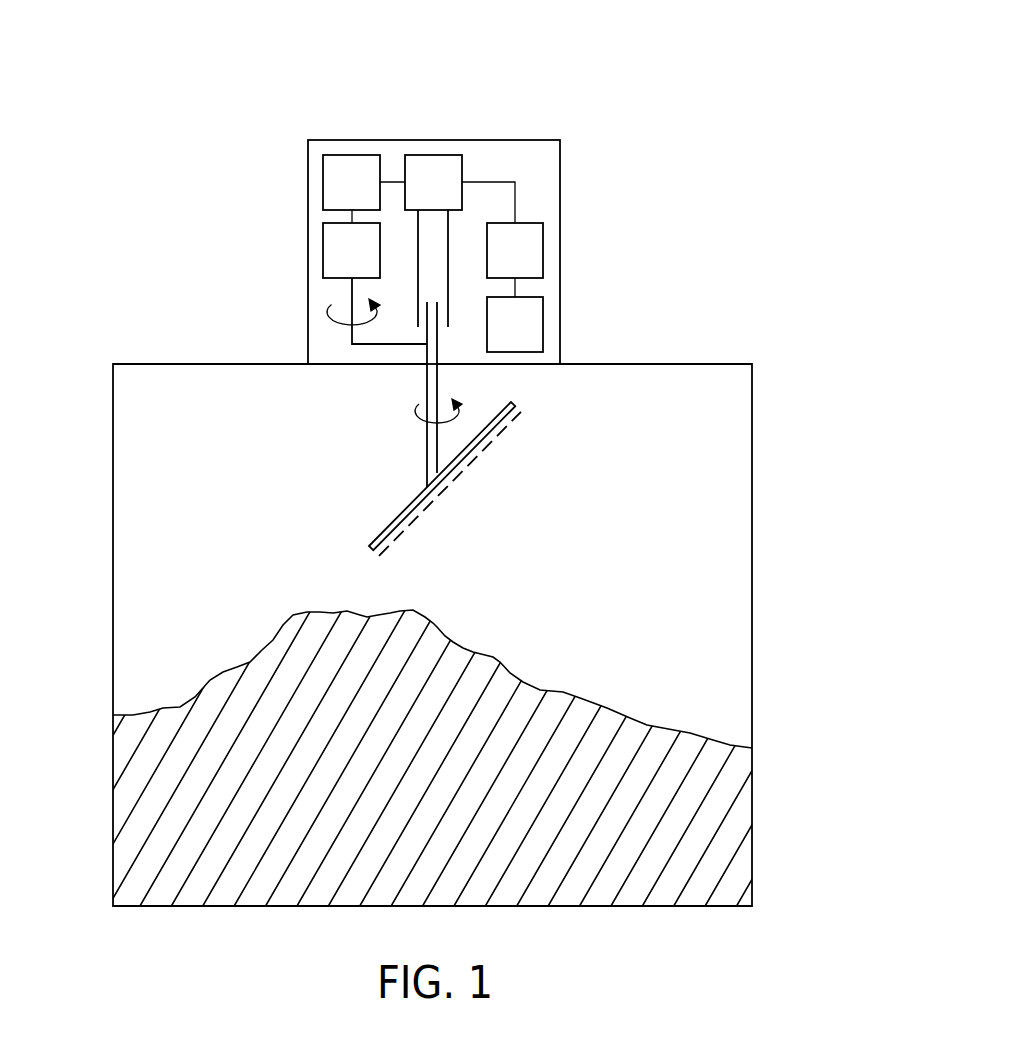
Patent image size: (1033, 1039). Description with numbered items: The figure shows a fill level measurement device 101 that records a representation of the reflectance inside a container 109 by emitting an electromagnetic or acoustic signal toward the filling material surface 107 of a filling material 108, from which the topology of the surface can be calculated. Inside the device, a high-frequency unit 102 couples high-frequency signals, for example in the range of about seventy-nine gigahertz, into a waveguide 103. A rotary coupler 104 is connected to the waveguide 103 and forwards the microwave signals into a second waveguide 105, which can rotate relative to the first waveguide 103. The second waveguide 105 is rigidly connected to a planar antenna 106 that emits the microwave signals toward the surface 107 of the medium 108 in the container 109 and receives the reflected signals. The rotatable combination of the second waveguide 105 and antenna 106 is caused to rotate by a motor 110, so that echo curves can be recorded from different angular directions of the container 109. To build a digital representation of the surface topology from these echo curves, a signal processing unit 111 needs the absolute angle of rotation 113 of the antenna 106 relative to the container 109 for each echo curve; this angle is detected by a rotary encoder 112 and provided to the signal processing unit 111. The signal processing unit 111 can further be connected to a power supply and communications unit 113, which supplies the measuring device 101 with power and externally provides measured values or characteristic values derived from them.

The fill level measurement device 101 is at (659, 100).
The high-frequency unit 102 is at (427, 155).
The waveguide 103 is at (433, 233).
The rotary coupler 104 is at (416, 313).
The second waveguide 105 is at (430, 445).
The planar antenna 106 is at (518, 403).
The filling material surface 107 is at (523, 678).
The filling material 108 is at (528, 855).
The container 109 is at (752, 654).
The motor 110 is at (323, 258).
The signal processing unit 111 is at (543, 247).
The rotary encoder 112 is at (543, 317).
The power supply and communications unit 113 is at (343, 155).